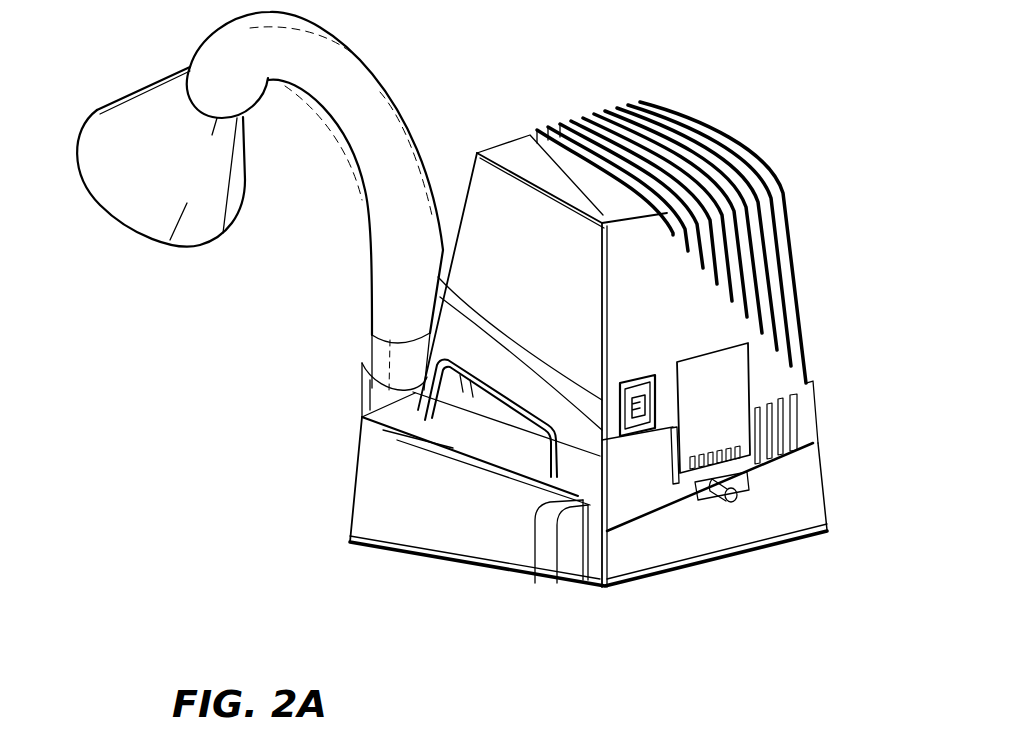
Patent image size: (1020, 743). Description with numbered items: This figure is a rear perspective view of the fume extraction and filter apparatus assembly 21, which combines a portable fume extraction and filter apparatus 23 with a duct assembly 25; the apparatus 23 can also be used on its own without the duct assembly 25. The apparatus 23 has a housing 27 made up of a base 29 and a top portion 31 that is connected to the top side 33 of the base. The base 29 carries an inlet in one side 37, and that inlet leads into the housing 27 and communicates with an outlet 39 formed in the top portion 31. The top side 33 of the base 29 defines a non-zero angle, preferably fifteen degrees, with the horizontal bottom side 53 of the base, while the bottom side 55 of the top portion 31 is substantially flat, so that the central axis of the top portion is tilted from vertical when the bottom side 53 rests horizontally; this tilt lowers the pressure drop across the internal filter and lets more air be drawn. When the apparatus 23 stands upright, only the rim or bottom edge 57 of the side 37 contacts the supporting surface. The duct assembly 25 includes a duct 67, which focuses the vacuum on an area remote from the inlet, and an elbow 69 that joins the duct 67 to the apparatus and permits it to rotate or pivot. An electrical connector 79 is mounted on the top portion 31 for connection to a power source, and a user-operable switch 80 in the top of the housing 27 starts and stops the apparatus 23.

The fume extraction and filter apparatus assembly 21 is at (53, 640).
The portable fume extraction and filter apparatus 23 is at (812, 270).
The duct assembly 25 is at (390, 51).
The housing 27 is at (806, 305).
The base 29 is at (372, 463).
The top portion 31 is at (770, 233).
The top side 33 is at (565, 525).
The side 37 is at (376, 509).
The outlet 39 is at (738, 143).
The bottom side 53 is at (746, 567).
The bottom side 55 is at (534, 586).
The bottom edge 57 is at (820, 537).
The duct 67 is at (391, 122).
The elbow 69 is at (362, 392).
The electrical connector 79 is at (653, 400).
The user-operable switch 80 is at (679, 110).